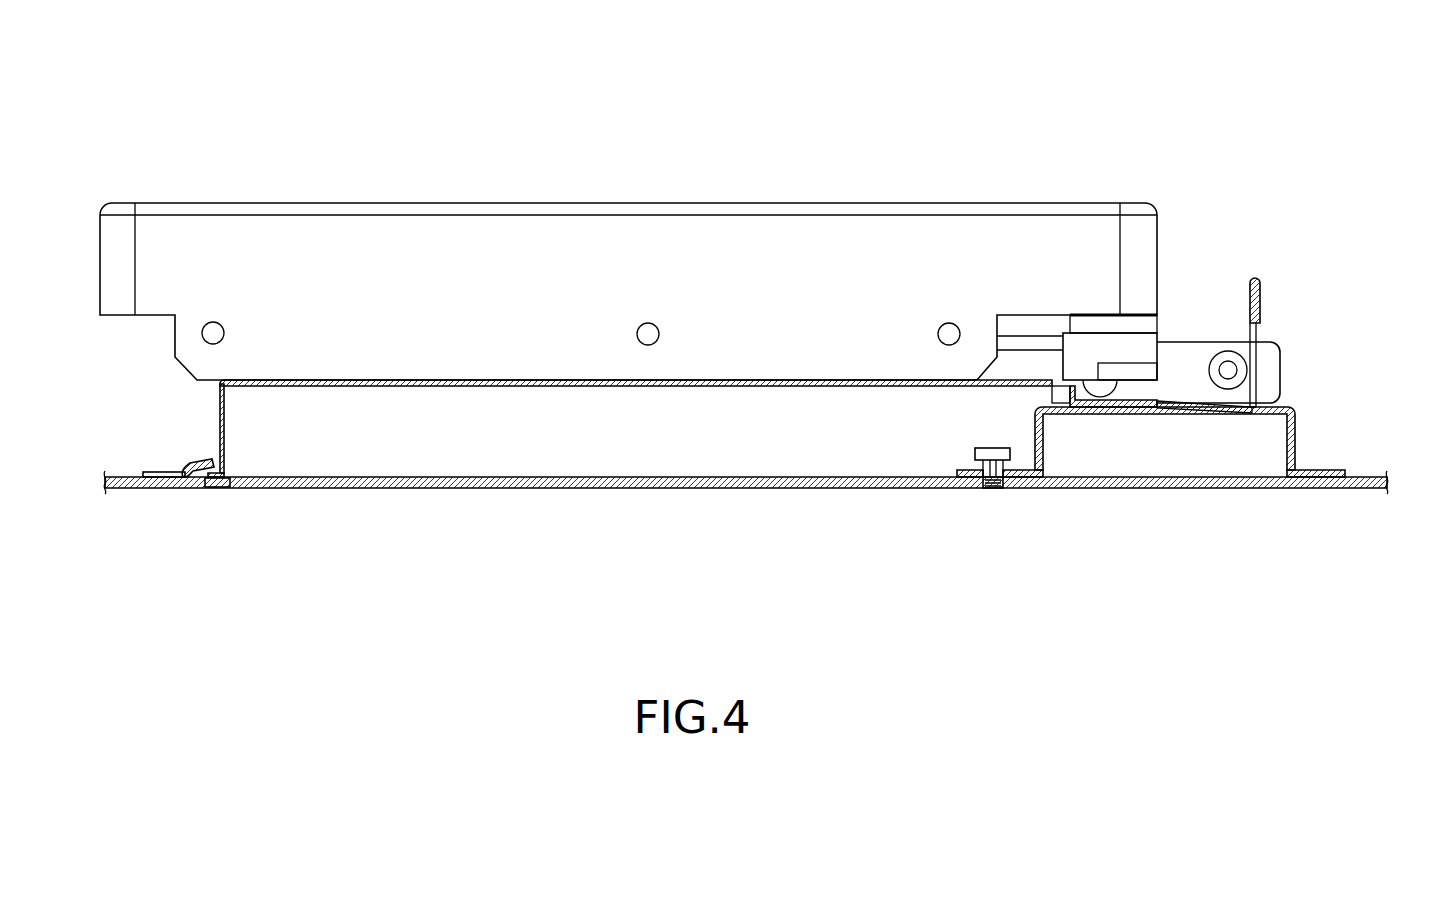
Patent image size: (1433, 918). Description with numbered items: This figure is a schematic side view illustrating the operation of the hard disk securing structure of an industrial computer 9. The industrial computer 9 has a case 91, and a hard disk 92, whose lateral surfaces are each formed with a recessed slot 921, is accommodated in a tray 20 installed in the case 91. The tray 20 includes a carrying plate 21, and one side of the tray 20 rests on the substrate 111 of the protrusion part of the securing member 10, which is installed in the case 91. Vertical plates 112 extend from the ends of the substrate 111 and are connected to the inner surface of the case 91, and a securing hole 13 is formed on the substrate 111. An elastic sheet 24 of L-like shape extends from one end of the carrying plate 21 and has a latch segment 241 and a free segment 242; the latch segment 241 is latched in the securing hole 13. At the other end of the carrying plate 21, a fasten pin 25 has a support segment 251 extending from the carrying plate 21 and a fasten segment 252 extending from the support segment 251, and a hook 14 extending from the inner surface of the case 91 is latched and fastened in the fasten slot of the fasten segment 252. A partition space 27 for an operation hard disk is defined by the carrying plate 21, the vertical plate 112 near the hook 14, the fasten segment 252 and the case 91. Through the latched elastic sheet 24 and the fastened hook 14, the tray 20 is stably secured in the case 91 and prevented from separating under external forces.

The industrial computer 9 is at (526, 71).
The hard disk 92 is at (767, 262).
The recessed slot 921 is at (948, 330).
The elastic sheet 24 is at (1178, 208).
The latch segment 241 is at (1195, 400).
The free segment 242 is at (1260, 303).
The securing hole 13 is at (1170, 410).
The securing member 10 is at (1300, 447).
The substrate 111 is at (1092, 410).
The vertical plate 112 is at (1040, 443).
The tray 20 is at (218, 418).
The carrying plate 21 is at (573, 380).
The partition space 27 is at (708, 453).
The fasten pin 25 is at (311, 556).
The support segment 251 is at (224, 437).
The fasten segment 252 is at (207, 488).
The hook 14 is at (200, 460).
The case 91 is at (132, 488).